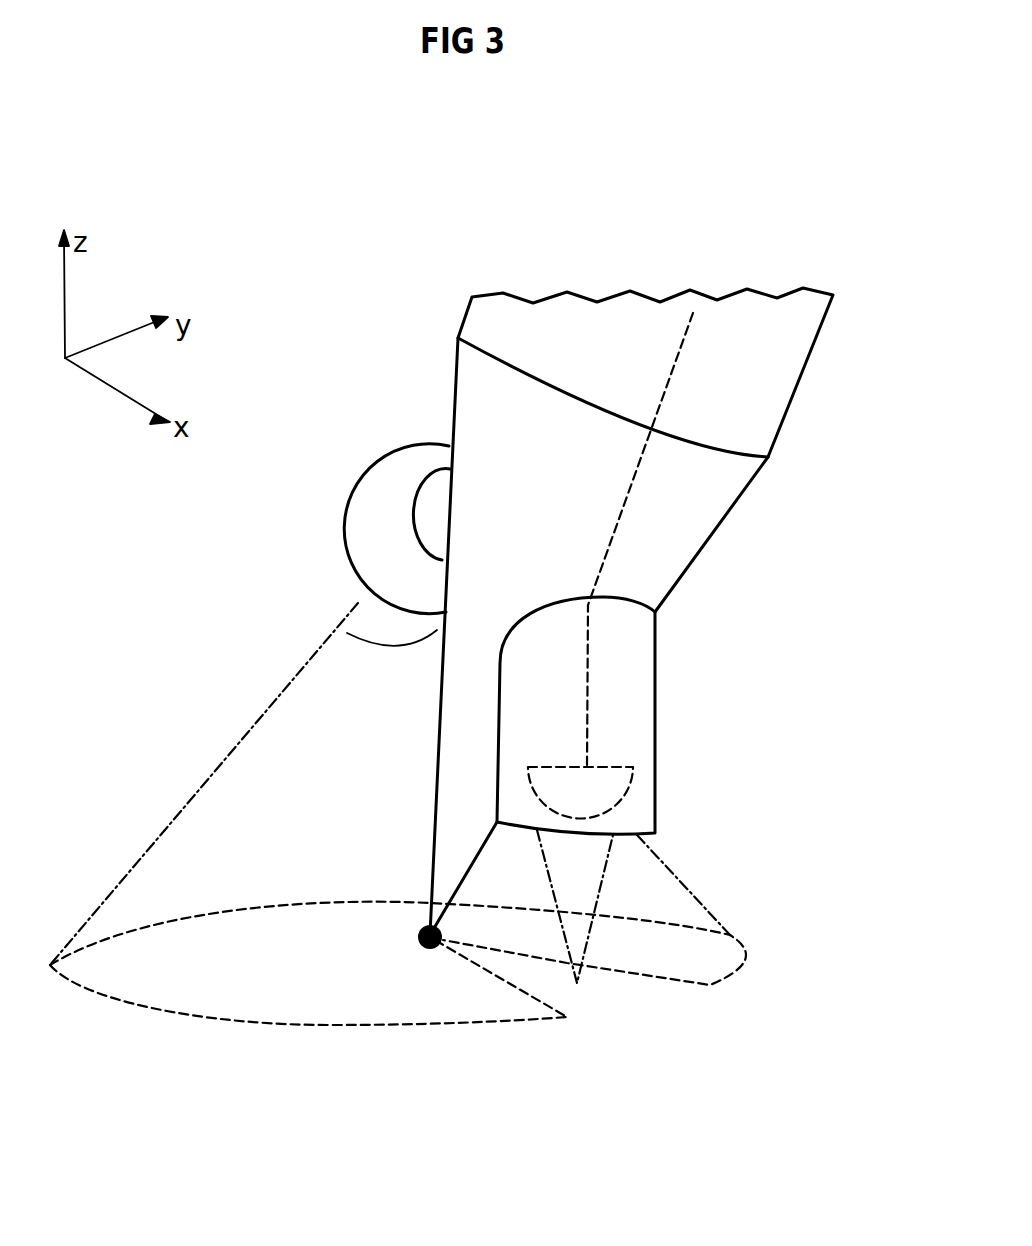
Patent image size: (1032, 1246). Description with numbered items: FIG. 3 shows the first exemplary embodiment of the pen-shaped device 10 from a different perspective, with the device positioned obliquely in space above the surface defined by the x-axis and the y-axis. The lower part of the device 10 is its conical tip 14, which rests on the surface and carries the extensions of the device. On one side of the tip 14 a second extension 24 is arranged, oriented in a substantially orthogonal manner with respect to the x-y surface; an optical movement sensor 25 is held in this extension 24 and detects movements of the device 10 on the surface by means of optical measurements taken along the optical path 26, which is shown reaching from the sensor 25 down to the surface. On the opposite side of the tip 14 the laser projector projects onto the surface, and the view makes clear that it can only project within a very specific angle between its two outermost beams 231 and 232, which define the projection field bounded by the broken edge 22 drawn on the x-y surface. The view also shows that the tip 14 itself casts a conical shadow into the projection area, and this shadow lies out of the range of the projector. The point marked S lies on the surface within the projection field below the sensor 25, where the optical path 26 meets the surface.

The device 10 is at (812, 409).
The conical tip 14 is at (700, 532).
The broken edge 22 is at (330, 1026).
The outermost beam 231 is at (250, 728).
The outermost beam 232 is at (732, 935).
The second extension 24 is at (652, 668).
The optical movement sensor 25 is at (561, 772).
The optical path 26 is at (592, 893).
The spot point S is at (587, 1000).